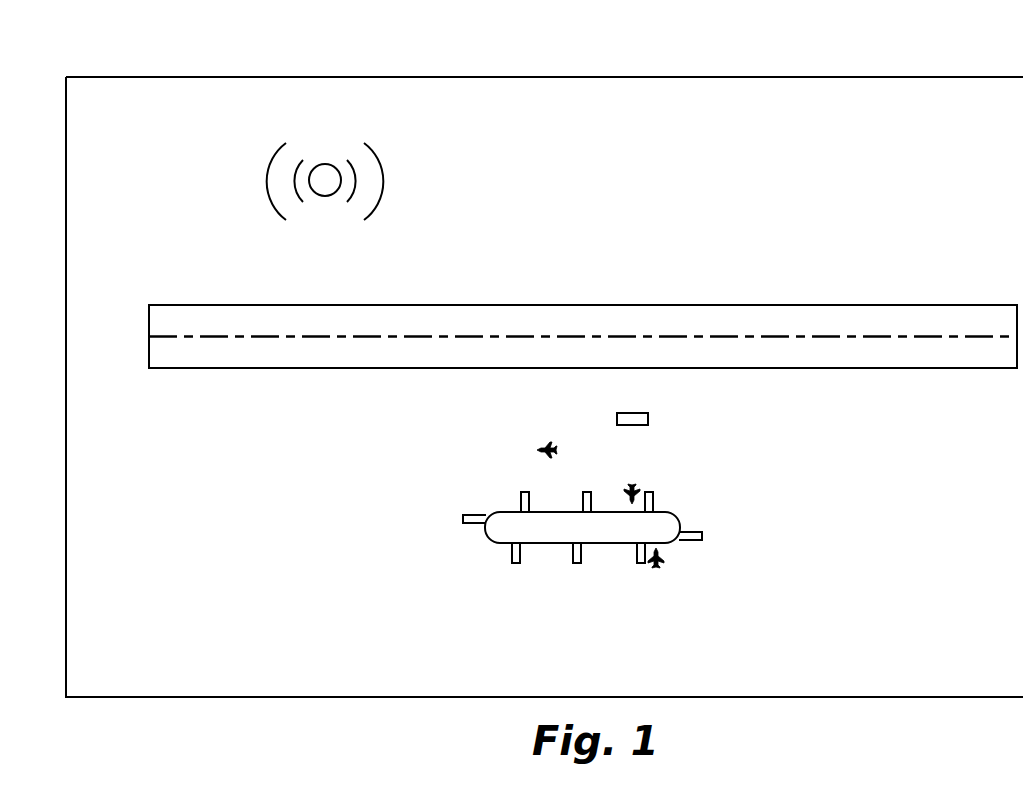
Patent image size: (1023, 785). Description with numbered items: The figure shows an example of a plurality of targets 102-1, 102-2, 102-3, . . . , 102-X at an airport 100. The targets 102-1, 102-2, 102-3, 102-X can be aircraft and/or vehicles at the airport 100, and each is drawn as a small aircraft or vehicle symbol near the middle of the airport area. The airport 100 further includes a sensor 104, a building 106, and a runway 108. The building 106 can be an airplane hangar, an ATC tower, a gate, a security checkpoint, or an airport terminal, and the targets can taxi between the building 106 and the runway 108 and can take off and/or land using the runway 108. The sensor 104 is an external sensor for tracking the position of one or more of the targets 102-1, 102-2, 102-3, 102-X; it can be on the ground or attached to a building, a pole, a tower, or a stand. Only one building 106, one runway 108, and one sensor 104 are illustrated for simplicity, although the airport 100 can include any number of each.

The airport 100 is at (97, 45).
The target 102-1 is at (537, 450).
The target 102-2 is at (645, 421).
The target 102-3 is at (630, 484).
The target 102-X is at (658, 570).
The sensor 104 is at (325, 197).
The building 106 is at (500, 540).
The runway 108 is at (758, 312).